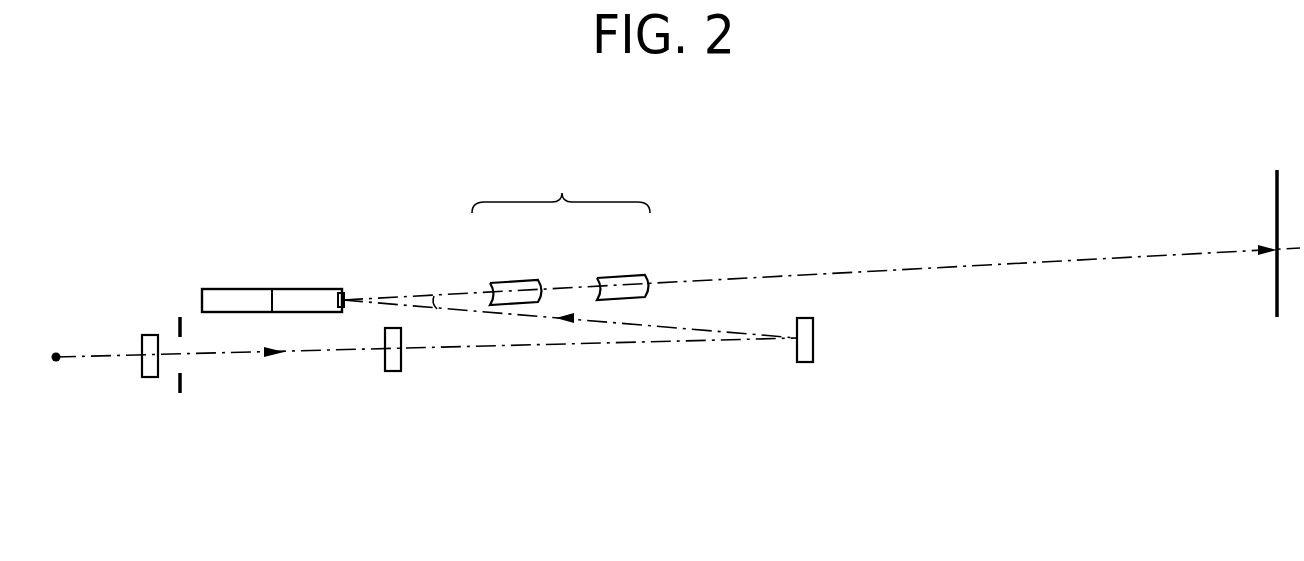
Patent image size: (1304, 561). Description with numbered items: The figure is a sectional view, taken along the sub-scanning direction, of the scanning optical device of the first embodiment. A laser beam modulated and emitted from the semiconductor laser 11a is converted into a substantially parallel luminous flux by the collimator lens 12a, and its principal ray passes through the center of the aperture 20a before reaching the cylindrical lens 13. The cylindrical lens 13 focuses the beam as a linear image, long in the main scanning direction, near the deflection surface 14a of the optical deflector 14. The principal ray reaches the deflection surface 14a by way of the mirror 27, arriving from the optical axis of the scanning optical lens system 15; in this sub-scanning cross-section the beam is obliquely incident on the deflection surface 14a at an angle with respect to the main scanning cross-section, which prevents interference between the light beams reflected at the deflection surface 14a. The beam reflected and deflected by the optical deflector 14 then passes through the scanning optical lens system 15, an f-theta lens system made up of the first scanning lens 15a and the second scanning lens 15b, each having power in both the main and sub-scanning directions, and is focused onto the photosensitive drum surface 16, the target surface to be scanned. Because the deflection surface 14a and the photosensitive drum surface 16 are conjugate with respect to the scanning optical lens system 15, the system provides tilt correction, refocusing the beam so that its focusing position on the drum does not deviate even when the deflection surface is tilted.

The semiconductor laser 11a is at (57, 362).
The collimator lens 12a is at (150, 378).
The aperture 20a is at (178, 318).
The optical deflector 14 is at (242, 288).
The deflection surface 14a is at (344, 289).
The cylindrical lens 13 is at (391, 373).
The scanning optical lens system 15 is at (561, 182).
The first scanning lens 15a is at (505, 281).
The second scanning lens 15b is at (617, 277).
The mirror 27 is at (805, 363).
The photosensitive drum surface 16 is at (1277, 315).